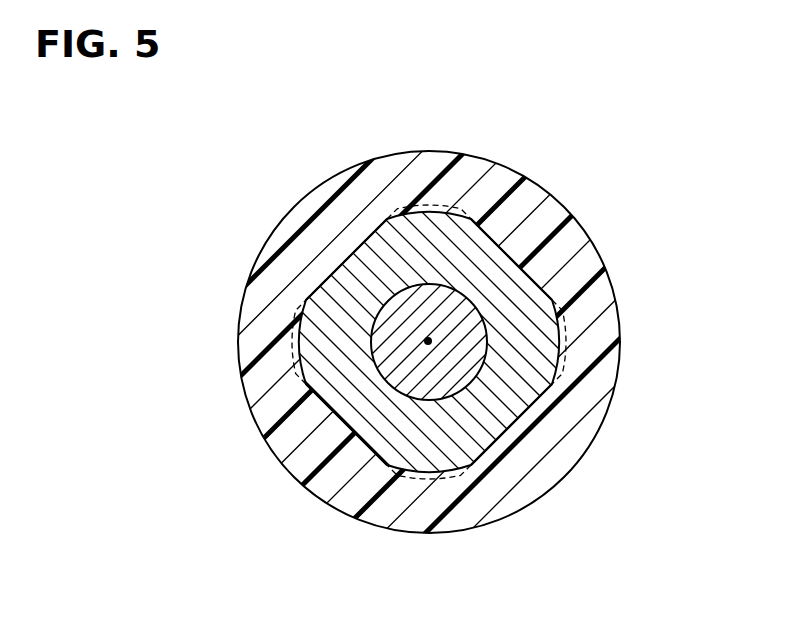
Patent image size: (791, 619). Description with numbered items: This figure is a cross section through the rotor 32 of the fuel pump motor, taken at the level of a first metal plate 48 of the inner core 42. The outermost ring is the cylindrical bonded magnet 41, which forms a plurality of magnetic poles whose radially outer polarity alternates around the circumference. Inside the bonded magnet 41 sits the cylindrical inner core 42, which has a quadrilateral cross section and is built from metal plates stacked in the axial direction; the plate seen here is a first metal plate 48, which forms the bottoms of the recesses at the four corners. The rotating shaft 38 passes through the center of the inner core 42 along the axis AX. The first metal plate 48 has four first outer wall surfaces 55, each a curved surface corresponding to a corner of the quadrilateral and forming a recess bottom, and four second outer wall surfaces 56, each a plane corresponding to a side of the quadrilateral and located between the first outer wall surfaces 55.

The rotor 32 is at (297, 197).
The bonded magnet 41 is at (262, 295).
The inner core 42 is at (337, 270).
The first metal plate 48 is at (445, 257).
The rotating shaft 38 is at (470, 353).
The first outer wall surface 55 is at (429, 210).
The second outer wall surface 56 is at (370, 240).
The axis AX is at (429, 346).